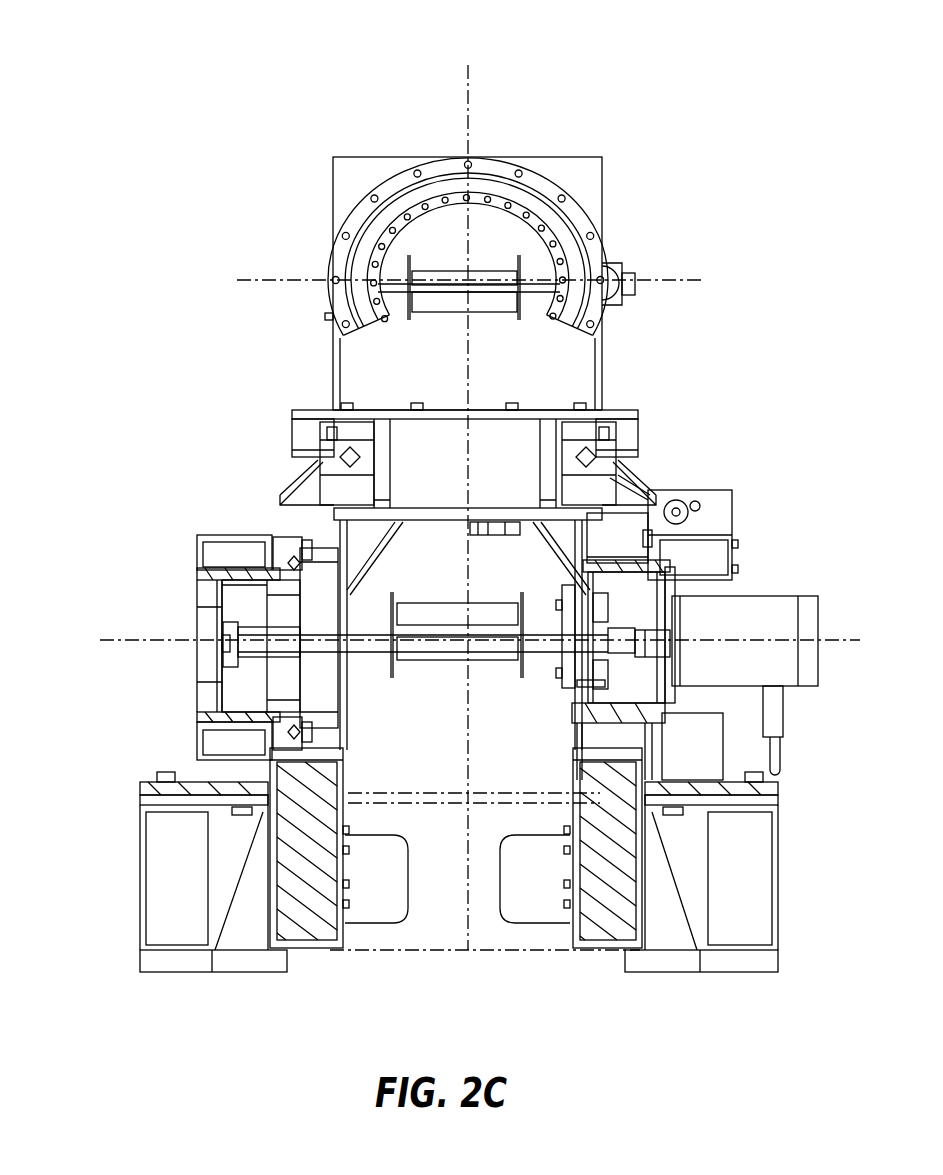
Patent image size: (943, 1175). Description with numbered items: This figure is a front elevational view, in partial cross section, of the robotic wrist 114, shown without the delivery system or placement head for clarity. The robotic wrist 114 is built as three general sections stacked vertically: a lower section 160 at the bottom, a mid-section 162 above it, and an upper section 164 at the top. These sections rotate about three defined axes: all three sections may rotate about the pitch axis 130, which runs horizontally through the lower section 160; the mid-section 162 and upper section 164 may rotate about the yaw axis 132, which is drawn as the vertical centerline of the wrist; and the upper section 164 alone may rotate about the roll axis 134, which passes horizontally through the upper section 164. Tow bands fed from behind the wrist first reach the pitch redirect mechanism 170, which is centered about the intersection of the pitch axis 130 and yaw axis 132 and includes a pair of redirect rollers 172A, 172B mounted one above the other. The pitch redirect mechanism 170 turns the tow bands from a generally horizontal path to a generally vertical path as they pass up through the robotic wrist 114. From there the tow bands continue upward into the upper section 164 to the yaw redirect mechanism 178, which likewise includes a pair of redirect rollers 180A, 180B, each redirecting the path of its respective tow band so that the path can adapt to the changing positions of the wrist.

The robotic wrist 114 is at (180, 113).
The pitch axis 130 is at (152, 645).
The yaw axis 132 is at (478, 68).
The roll axis 134 is at (478, 275).
The lower section 160 is at (742, 547).
The mid-section 162 is at (630, 402).
The upper section 164 is at (318, 222).
The pitch redirect mechanism 170 is at (428, 692).
The redirect roller 172A is at (448, 603).
The redirect roller 172B is at (495, 663).
The yaw redirect mechanism 178 is at (427, 330).
The redirect roller 180A is at (440, 265).
The redirect roller 180B is at (488, 313).